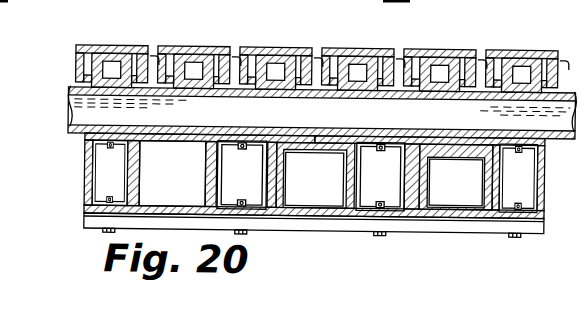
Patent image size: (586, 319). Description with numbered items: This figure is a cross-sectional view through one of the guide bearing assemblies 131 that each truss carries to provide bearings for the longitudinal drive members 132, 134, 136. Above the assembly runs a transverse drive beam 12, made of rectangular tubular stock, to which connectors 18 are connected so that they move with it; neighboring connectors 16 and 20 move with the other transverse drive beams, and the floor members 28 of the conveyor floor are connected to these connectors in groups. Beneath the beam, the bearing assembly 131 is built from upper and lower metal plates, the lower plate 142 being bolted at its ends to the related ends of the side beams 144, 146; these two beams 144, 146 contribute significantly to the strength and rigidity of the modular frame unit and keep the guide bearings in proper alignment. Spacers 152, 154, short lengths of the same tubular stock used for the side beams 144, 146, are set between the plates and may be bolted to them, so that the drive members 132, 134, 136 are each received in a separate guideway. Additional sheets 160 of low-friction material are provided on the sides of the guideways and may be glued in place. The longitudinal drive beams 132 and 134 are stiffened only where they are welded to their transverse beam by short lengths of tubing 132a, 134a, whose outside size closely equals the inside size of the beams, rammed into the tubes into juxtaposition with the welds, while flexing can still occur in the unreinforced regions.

The transverse drive beam 12 is at (152, 96).
The connector 16 is at (252, 46).
The connector 18 is at (193, 46).
The connector 20 is at (126, 46).
The floor member 28 is at (104, 45).
The bearing assembly 131 is at (330, 242).
The longitudinal drive member 132 is at (470, 215).
The short length of tubing 132a is at (447, 201).
The longitudinal drive member 134 is at (302, 220).
The short length of tubing 134a is at (305, 143).
The longitudinal drive member 136 is at (148, 152).
The lower plate 142 is at (403, 228).
The side beam 144 is at (83, 178).
The side beam 146 is at (562, 170).
The spacer 152 is at (260, 133).
The spacer 154 is at (397, 133).
The sheet 160 is at (134, 175).